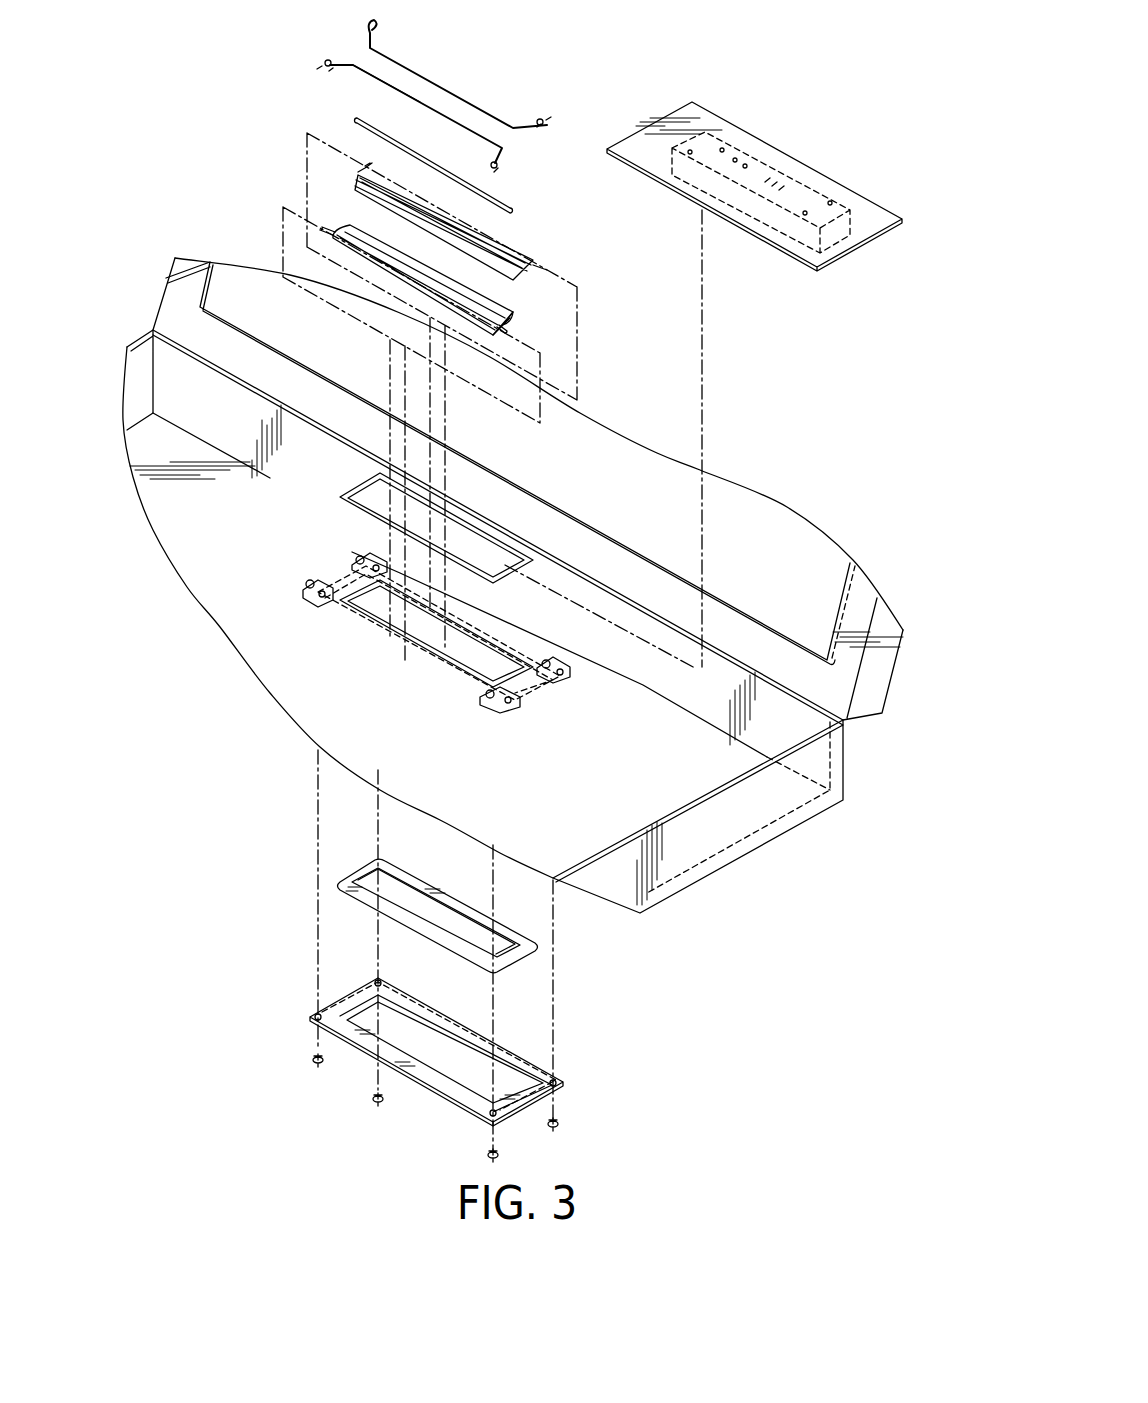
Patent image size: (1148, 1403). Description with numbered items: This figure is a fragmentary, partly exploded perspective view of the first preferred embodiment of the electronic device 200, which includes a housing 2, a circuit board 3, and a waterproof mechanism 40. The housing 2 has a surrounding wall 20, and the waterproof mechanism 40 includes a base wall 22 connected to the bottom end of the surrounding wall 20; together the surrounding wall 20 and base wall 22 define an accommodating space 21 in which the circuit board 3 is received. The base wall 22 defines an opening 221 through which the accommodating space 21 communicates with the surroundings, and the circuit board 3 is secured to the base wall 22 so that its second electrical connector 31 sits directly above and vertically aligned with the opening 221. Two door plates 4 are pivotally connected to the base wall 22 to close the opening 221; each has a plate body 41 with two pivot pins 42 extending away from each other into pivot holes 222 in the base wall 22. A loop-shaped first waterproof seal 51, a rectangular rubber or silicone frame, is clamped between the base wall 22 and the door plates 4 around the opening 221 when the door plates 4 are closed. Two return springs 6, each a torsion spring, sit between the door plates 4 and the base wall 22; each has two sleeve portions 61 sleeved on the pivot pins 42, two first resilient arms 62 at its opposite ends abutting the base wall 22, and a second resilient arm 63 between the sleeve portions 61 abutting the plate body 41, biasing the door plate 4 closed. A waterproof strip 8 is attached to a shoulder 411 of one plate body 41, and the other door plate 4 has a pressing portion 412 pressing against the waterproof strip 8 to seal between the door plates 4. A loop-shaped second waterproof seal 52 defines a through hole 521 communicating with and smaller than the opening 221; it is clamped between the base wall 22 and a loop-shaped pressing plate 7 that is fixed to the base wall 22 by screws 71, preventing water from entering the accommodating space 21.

The housing 2 is at (143, 322).
The electronic device 200 is at (170, 232).
The surrounding wall 20 is at (608, 738).
The accommodating space 21 is at (677, 737).
The base wall 22 is at (600, 800).
The circuit board 3 is at (754, 166).
The second electrical connector 31 is at (790, 190).
The door plate 4 is at (418, 299).
The plate body 41 is at (403, 267).
The shoulder 411 is at (353, 185).
The pressing portion 412 is at (507, 310).
The pivot pin 42 is at (363, 260).
The waterproof mechanism 40 is at (398, 107).
The return spring 6 is at (358, 73).
The sleeve portion 61 is at (330, 62).
The first resilient arm 62 is at (330, 66).
The second resilient arm 63 is at (383, 82).
The waterproof strip 8 is at (357, 120).
The first waterproof seal 51 is at (340, 490).
The second waterproof seal 52 is at (379, 904).
The through hole 521 is at (417, 903).
The pressing plate 7 is at (437, 1083).
The screw 71 is at (315, 1053).
The opening 221 is at (400, 626).
The pivot hole 222 is at (303, 598).